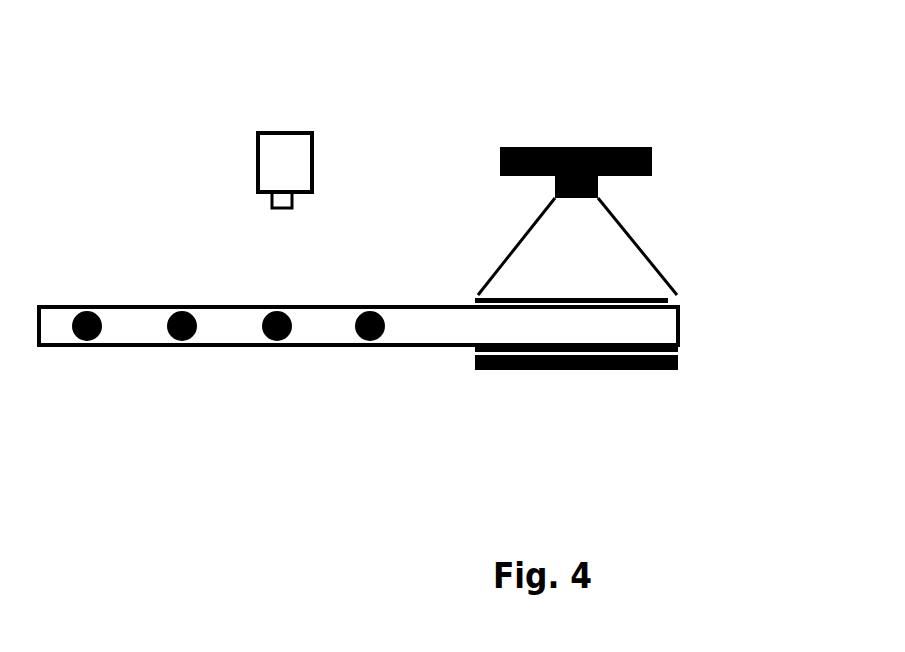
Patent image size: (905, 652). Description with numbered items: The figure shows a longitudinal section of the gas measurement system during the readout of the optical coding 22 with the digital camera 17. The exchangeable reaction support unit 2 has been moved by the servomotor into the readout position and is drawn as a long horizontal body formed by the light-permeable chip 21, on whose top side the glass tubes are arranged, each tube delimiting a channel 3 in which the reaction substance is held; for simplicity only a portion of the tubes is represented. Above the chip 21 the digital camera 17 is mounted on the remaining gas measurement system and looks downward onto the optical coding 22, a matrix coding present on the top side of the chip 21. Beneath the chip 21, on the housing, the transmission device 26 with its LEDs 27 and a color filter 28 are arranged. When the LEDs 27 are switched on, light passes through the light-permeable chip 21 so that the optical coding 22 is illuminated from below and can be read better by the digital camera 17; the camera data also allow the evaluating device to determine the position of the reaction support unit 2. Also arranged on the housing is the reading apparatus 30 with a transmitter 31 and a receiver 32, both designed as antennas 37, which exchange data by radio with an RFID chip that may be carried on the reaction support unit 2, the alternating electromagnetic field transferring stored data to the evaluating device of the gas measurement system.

The reaction support unit 2 is at (355, 272).
The chip 21 is at (125, 320).
The channel 3 is at (83, 345).
The reading apparatus 30 is at (305, 142).
The transmitter 31 is at (263, 118).
The receiver 32 is at (263, 118).
The antenna 37 is at (268, 202).
The digital camera 17 is at (537, 147).
The optical coding 22 is at (607, 303).
The color filter 28 is at (678, 349).
The transmission device 26 is at (576, 406).
The LEDs 27 is at (540, 370).